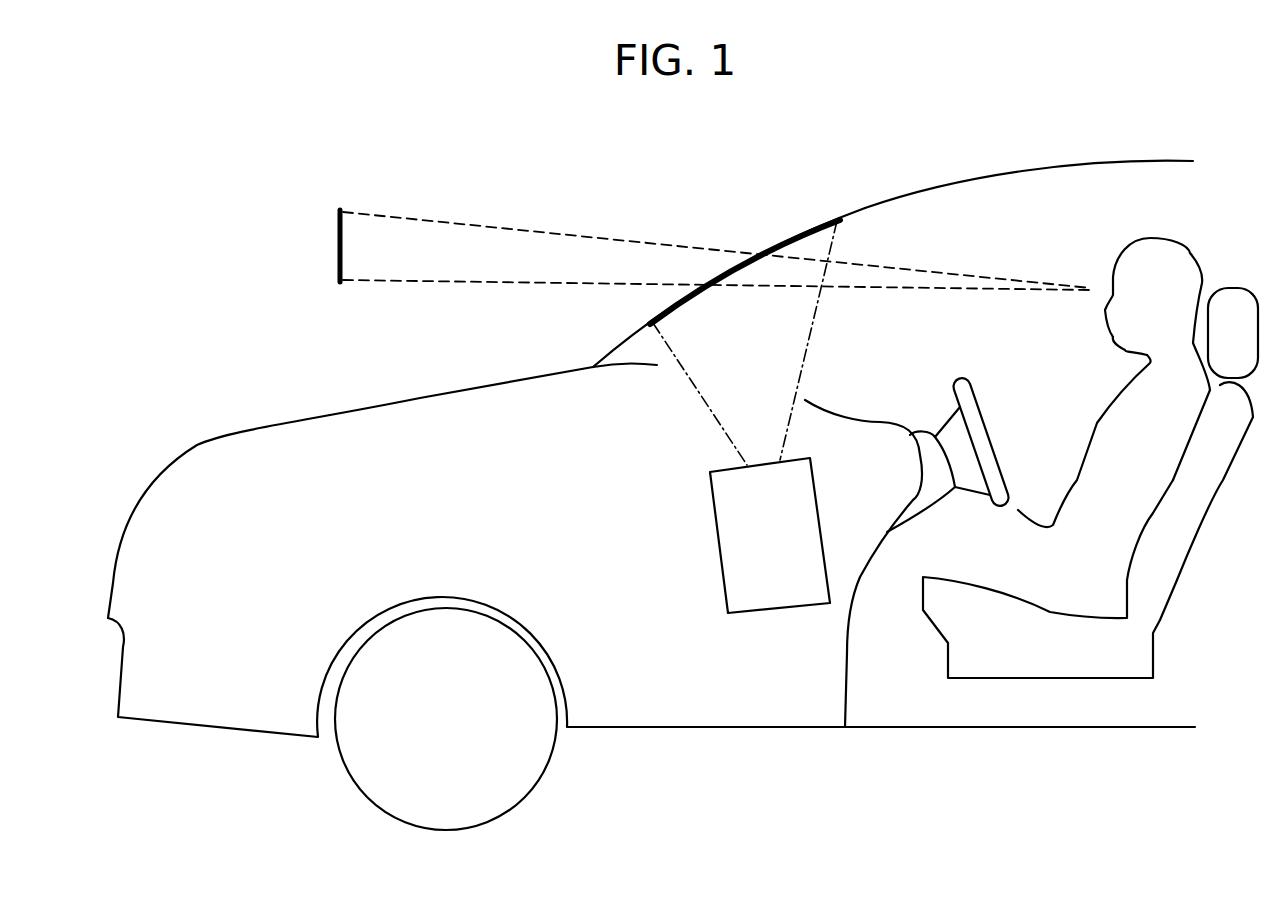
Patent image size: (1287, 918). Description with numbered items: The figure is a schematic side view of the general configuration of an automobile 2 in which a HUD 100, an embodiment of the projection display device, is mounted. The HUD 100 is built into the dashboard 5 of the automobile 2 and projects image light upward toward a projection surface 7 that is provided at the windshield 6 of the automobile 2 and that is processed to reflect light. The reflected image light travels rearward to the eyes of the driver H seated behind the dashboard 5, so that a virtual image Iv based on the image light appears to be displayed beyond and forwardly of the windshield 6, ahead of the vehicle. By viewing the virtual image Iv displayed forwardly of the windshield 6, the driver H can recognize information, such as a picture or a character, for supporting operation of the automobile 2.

The automobile 2 is at (265, 430).
The dashboard 5 is at (880, 422).
The windshield 6 is at (865, 208).
The projection surface 7 is at (808, 232).
The HUD 100 is at (813, 604).
The virtual image Iv is at (337, 227).
The driver H is at (1185, 253).